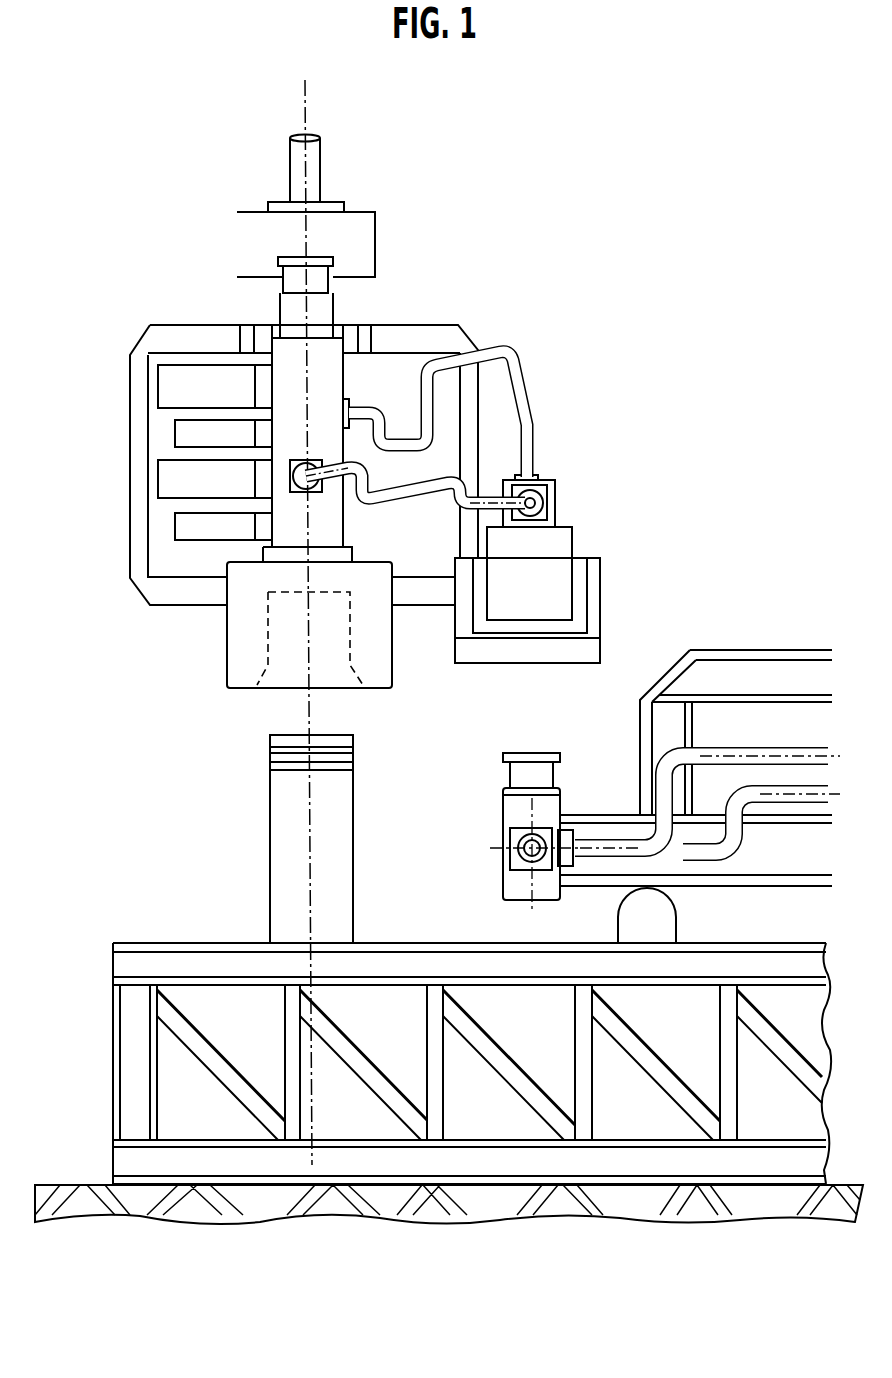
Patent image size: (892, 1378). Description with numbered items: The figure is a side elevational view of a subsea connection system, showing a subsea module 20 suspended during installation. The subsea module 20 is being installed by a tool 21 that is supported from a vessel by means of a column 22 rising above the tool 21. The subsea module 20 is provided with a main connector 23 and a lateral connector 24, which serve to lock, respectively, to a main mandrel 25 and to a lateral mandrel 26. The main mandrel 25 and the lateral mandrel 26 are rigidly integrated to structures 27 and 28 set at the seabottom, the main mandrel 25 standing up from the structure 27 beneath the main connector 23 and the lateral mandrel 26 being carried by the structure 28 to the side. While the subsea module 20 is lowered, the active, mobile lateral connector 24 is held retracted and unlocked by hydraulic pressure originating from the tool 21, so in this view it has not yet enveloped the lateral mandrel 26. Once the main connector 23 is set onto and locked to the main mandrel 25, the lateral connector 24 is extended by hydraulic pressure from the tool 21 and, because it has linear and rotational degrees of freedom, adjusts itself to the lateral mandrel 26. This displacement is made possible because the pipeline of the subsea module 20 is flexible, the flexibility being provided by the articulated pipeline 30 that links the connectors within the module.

The subsea module 20 is at (183, 332).
The tool 21 is at (377, 237).
The column 22 is at (322, 160).
The main connector 23 is at (227, 652).
The lateral connector 24 is at (575, 532).
The main mandrel 25 is at (270, 744).
The lateral mandrel 26 is at (510, 772).
The structure 27 is at (200, 943).
The structure 28 is at (727, 650).
The articulated pipeline 30 is at (530, 398).